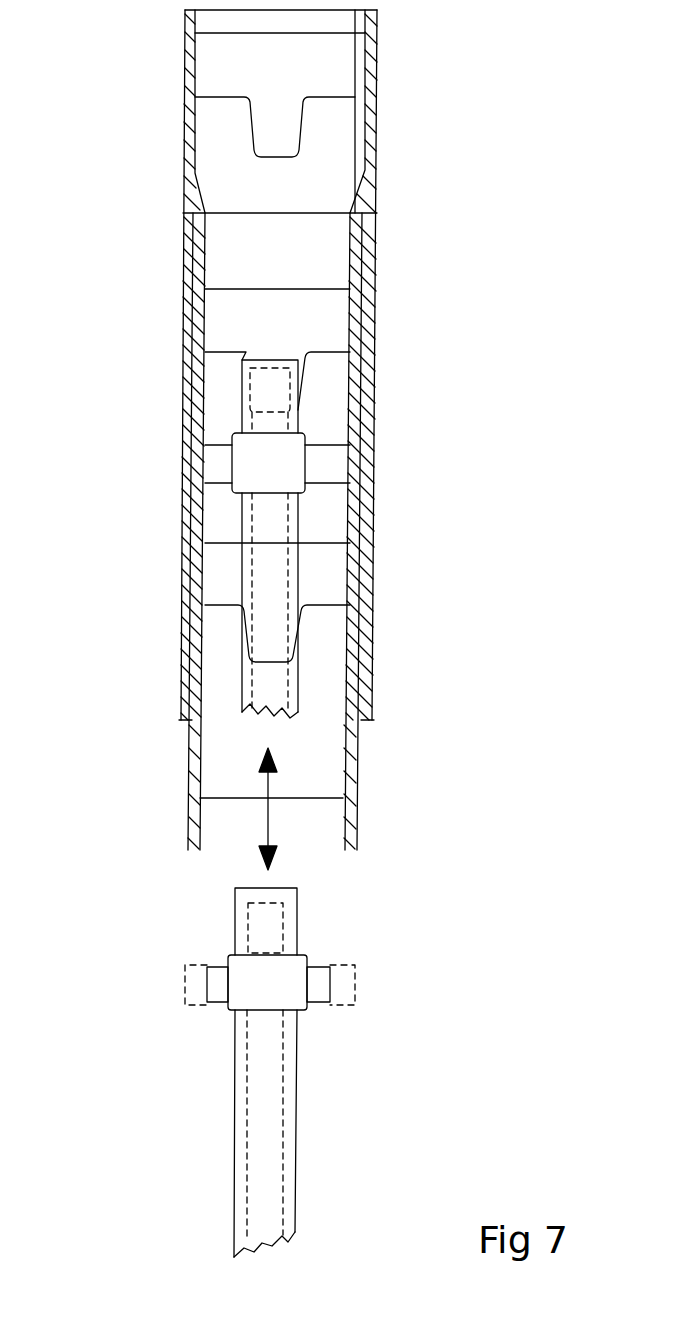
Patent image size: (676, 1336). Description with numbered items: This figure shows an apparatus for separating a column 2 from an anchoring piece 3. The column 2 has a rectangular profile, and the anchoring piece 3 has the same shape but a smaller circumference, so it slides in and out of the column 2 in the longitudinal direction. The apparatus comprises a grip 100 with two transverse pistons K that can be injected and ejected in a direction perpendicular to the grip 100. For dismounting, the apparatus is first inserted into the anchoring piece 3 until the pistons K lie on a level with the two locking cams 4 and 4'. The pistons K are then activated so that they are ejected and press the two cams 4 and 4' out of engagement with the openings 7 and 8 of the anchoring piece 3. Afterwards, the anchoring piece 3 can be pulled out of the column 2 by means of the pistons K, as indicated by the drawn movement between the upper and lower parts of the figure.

The column 2 is at (372, 655).
The anchoring piece 3 is at (358, 822).
The locking cam 4 is at (170, 405).
The locking cam 4' is at (383, 400).
The opening 7 is at (182, 504).
The opening 8 is at (365, 490).
The transverse piston K is at (220, 465).
The grip 100 is at (292, 1128).